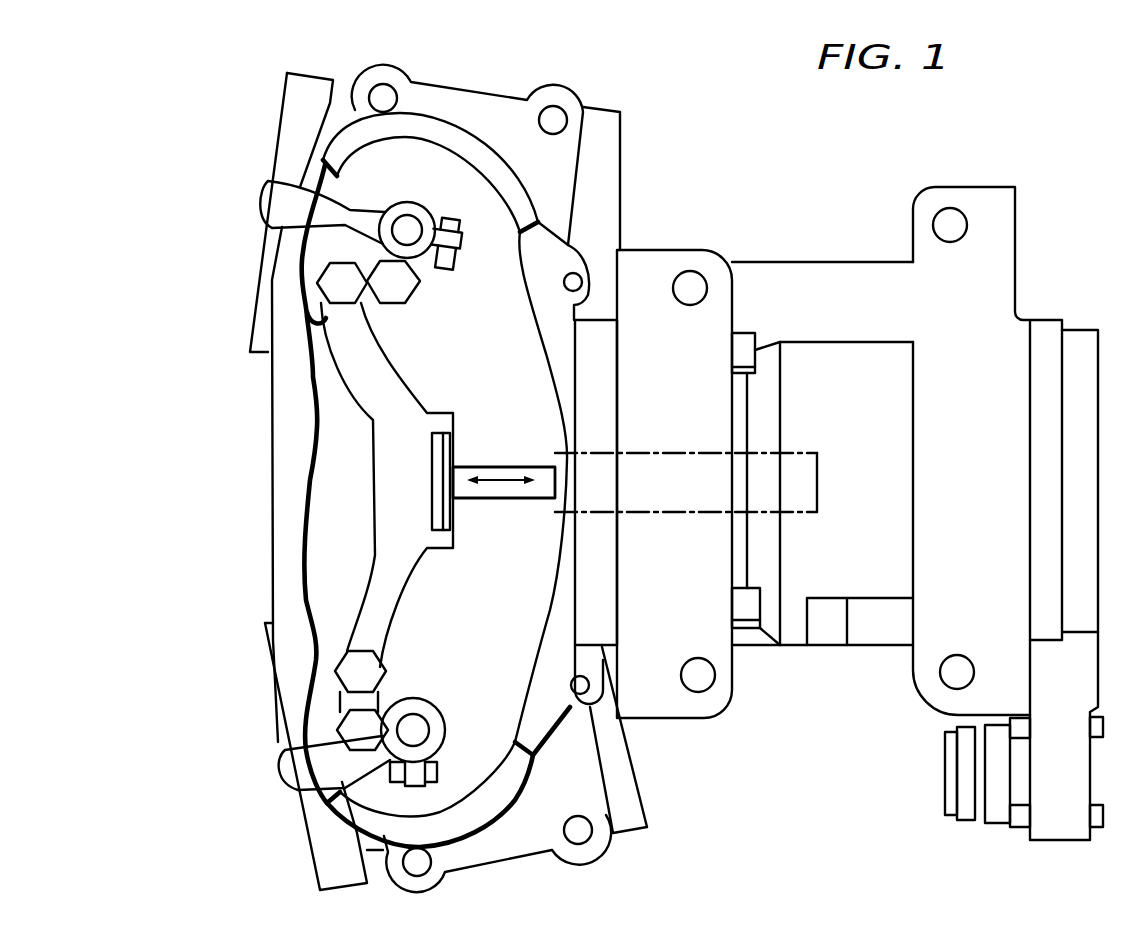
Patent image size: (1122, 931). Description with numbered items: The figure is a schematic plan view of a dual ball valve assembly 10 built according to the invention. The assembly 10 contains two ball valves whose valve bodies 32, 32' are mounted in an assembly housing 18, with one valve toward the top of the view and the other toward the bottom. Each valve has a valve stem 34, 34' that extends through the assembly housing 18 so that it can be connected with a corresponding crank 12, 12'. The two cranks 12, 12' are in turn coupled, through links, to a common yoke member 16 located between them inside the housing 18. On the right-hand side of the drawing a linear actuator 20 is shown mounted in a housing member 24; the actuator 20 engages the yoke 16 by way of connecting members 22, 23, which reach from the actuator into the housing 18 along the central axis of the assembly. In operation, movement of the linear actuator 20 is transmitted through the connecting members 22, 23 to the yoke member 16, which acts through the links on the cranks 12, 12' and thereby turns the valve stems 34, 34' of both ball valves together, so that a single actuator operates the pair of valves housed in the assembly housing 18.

The ball valve assembly 10 is at (737, 188).
The crank 12 is at (280, 200).
The crank 12' is at (282, 783).
The yoke member 16 is at (375, 420).
The assembly housing 18 is at (283, 468).
The linear actuator 20 is at (822, 462).
The connecting member 22 is at (433, 510).
The connecting member 23 is at (480, 468).
The housing member 24 is at (843, 228).
The valve body 32 is at (494, 180).
The valve body 32' is at (515, 788).
The valve stem 34 is at (318, 236).
The valve stem 34' is at (310, 742).